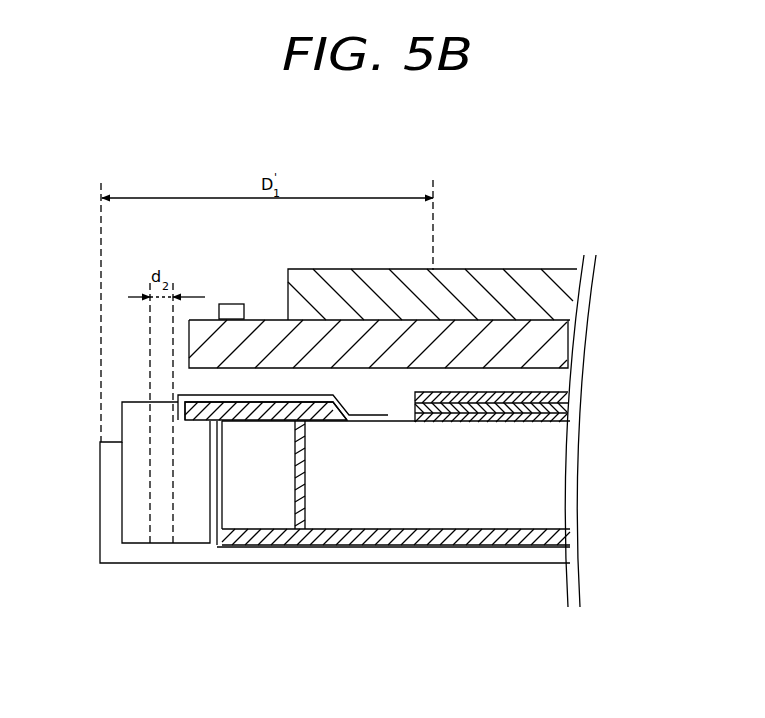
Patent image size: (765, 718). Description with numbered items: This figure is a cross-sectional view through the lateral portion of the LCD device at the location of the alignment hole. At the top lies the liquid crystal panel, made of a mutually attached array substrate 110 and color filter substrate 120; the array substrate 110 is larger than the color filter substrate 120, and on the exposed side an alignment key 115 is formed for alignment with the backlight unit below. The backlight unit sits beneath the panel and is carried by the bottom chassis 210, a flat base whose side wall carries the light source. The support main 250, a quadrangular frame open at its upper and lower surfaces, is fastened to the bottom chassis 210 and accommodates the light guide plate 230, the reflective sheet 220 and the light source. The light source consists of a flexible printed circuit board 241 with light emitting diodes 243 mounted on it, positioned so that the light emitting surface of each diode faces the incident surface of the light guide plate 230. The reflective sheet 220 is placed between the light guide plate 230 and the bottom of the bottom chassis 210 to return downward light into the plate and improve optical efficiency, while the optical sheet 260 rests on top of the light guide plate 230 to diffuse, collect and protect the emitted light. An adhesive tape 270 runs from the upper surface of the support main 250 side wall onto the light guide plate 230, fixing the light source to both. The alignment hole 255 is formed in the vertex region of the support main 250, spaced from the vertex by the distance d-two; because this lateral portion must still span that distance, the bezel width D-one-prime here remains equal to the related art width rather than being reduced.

The array substrate 110 is at (555, 343).
The alignment key 115 is at (232, 304).
The color filter substrate 120 is at (555, 297).
The bottom chassis 210 is at (303, 553).
The reflective sheet 220 is at (355, 545).
The light guide plate 230 is at (480, 513).
The flexible printed circuit board 241 is at (187, 408).
The light emitting diode 243 is at (257, 513).
The support main 250 is at (191, 517).
The alignment hole 255 is at (160, 526).
The optical sheet 260 is at (583, 386).
The adhesive tape 270 is at (197, 395).